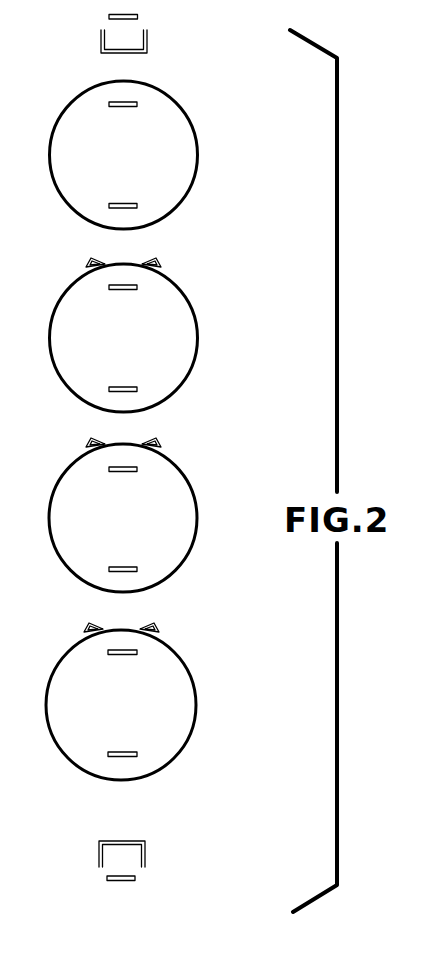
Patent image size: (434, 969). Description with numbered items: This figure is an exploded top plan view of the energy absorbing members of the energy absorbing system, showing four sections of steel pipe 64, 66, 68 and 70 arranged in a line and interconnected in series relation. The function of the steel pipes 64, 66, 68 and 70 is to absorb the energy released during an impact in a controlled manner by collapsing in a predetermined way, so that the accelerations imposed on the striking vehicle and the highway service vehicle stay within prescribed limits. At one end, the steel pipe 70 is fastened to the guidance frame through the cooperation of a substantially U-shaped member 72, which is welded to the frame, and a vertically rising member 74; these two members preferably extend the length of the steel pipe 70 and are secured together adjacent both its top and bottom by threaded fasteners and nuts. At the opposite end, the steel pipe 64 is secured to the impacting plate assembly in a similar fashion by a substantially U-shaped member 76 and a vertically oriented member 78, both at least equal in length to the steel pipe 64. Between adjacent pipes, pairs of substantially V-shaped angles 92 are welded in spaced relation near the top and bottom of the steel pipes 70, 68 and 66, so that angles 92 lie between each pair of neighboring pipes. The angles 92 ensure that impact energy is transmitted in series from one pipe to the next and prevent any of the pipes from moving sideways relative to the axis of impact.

The steel pipe 64 is at (198, 137).
The steel pipe 66 is at (198, 332).
The steel pipe 68 is at (197, 508).
The steel pipe 70 is at (196, 708).
The U-shaped member 72 is at (145, 850).
The vertically rising member 74 is at (121, 882).
The U-shaped member 76 is at (147, 39).
The vertically oriented member 78 is at (123, 107).
The angles 92 is at (154, 262).